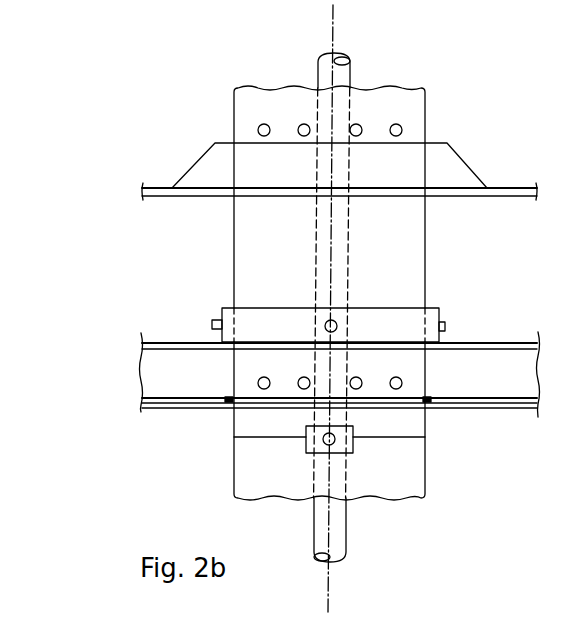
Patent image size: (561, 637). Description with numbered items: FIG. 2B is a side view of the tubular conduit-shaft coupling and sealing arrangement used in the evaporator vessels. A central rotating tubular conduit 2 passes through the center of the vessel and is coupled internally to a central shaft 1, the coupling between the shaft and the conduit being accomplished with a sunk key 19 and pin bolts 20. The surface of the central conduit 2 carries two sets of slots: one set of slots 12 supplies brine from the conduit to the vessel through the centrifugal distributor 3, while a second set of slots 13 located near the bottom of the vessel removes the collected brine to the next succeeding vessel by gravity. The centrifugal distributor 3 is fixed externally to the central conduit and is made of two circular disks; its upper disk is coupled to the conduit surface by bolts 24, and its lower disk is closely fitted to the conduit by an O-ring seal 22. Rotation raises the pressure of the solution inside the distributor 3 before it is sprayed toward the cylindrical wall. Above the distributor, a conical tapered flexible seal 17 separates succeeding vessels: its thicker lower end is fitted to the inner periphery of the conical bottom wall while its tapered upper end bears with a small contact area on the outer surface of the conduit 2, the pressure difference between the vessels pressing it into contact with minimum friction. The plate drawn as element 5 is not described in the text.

The central shaft 1 is at (312, 540).
The central rotating tubular conduit 2 is at (233, 265).
The centrifugal distributor 3 is at (195, 340).
The upper plate 5 is at (158, 196).
The slots 12 is at (257, 383).
The slots 13 is at (257, 130).
The conical tapered flexible seal 17 is at (196, 162).
The sunk key 19 is at (310, 454).
The pin bolts 20 is at (323, 443).
The O-ring seal 22 is at (225, 411).
The bolts 24 is at (210, 322).